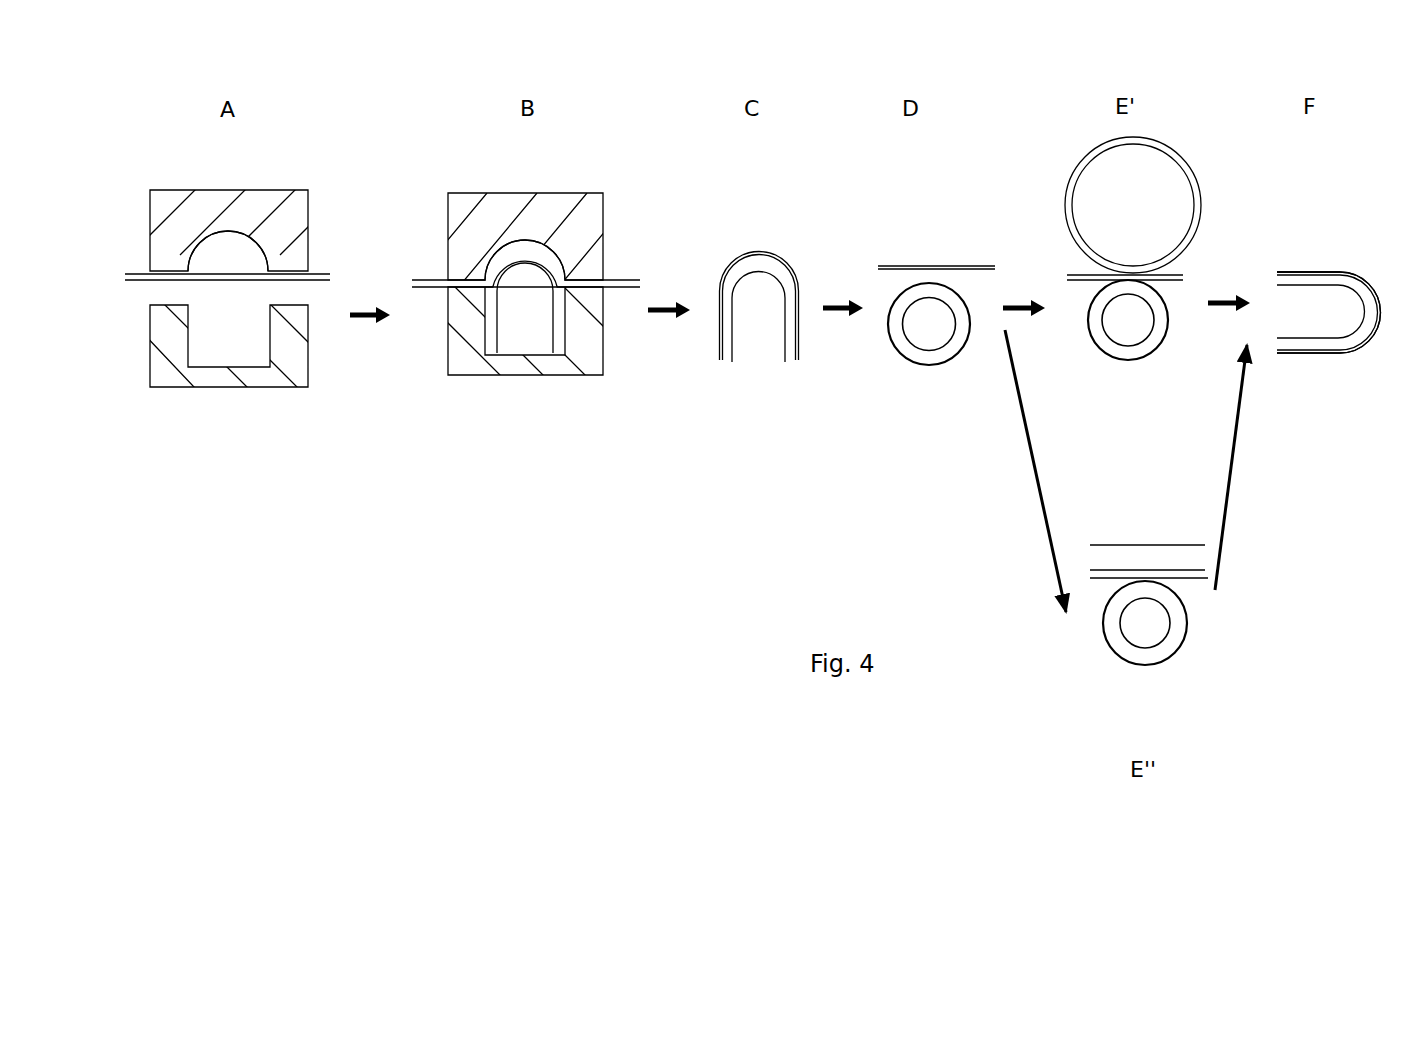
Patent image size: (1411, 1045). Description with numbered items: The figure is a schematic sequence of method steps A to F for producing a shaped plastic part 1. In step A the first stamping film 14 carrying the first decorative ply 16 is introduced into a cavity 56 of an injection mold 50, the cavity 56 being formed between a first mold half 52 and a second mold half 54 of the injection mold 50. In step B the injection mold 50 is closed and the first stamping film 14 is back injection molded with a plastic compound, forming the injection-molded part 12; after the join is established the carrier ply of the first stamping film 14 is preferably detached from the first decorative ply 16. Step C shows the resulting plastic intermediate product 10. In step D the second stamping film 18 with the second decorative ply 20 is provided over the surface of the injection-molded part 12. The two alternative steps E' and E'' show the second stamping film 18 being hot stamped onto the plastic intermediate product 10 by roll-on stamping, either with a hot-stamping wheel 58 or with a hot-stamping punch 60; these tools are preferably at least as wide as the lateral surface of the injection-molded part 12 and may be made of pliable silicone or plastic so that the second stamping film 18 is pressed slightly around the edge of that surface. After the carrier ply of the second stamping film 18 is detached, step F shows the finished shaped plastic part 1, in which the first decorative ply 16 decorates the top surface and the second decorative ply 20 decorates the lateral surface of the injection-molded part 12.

The shaped plastic part 1 is at (1323, 232).
The plastic intermediate product 10 is at (753, 233).
The injection-molded part 12 is at (492, 337).
The first stamping film 14 is at (128, 274).
The first decorative ply 16 is at (722, 276).
The second stamping film 18 is at (915, 266).
The second decorative ply 20 is at (1296, 272).
The injection mold 50 is at (130, 159).
The first mold half 52 is at (277, 197).
The second mold half 54 is at (167, 373).
The cavity 56 is at (223, 253).
The hot-stamping wheel 58 is at (1092, 180).
The hot-stamping punch 60 is at (1108, 557).